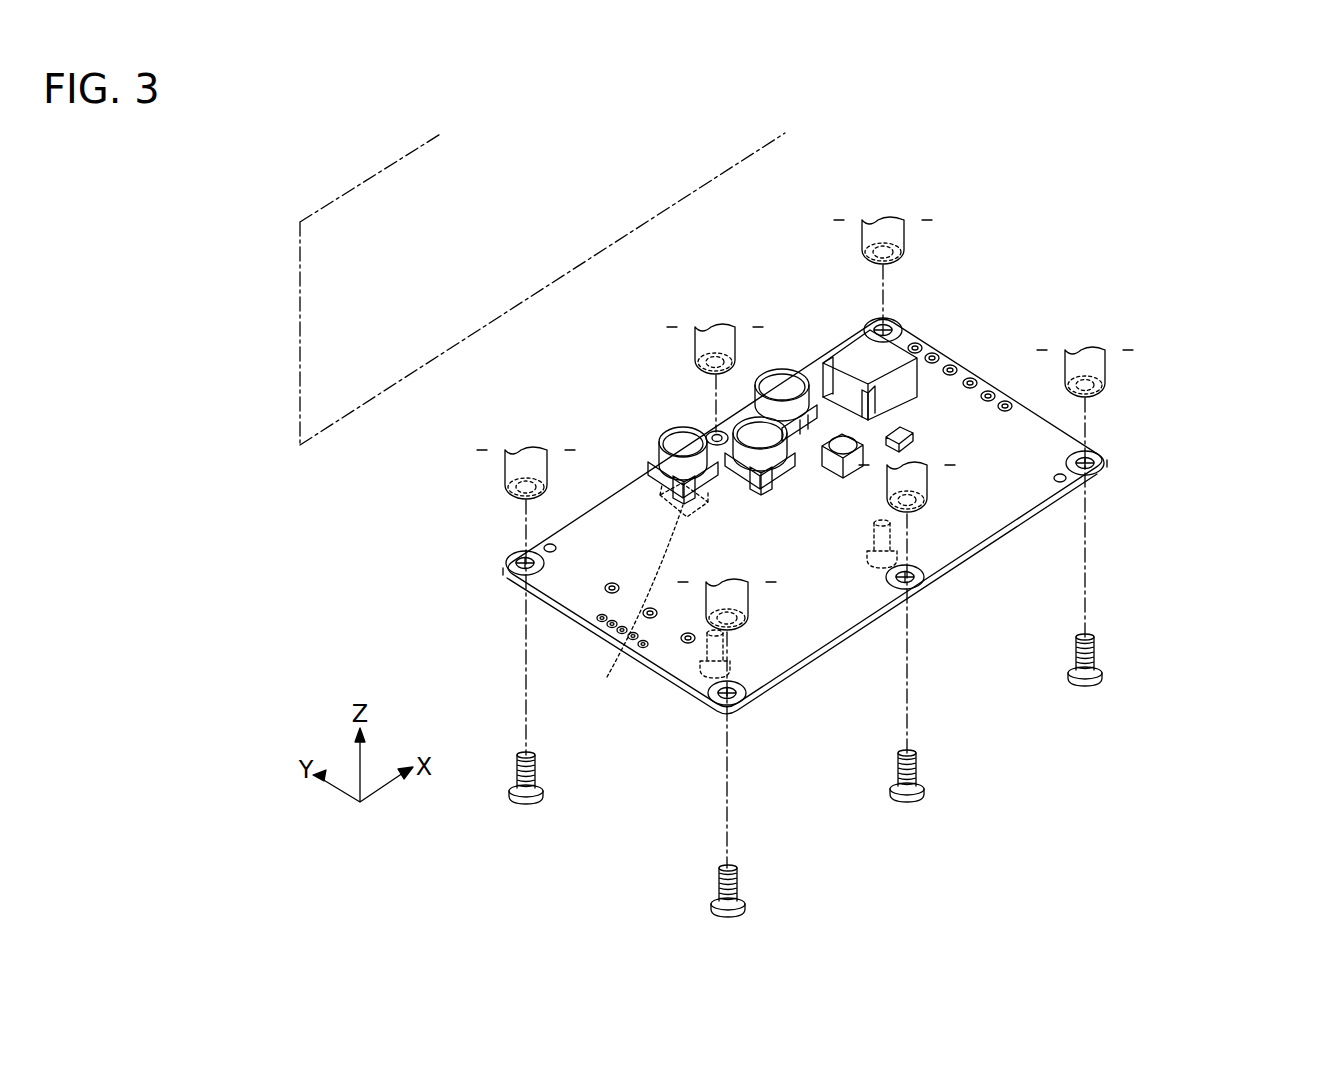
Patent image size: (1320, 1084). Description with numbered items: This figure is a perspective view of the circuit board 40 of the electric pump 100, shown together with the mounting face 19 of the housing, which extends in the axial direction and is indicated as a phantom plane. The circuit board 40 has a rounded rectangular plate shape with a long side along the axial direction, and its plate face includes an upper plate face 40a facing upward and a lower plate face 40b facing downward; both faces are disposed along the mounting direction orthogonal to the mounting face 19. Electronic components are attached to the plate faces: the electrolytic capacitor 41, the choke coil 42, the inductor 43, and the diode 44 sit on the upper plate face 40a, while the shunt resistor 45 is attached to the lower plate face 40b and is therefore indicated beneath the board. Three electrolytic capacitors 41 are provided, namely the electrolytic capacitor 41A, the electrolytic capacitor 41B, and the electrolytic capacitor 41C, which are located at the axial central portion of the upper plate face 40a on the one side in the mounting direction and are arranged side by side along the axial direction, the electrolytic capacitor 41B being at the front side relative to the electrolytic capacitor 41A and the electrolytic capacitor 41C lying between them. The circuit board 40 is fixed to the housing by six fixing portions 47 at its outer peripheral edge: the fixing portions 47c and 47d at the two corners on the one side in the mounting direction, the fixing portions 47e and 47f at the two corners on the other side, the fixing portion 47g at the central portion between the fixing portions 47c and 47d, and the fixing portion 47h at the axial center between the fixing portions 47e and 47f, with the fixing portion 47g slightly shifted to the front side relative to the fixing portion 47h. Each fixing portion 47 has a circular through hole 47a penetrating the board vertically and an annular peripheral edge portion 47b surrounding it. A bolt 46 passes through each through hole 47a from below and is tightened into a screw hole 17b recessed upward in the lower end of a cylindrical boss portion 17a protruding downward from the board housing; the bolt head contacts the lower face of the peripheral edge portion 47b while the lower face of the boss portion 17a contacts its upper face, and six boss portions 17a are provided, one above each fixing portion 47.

The electric pump 100 is at (1165, 272).
The mounting face 19 is at (300, 382).
The boss portion 17a is at (886, 230).
The screw hole 17b is at (718, 350).
The circuit board 40 is at (877, 498).
The upper plate face 40a is at (1022, 440).
The lower plate face 40b is at (970, 524).
The electrolytic capacitor 41 is at (712, 489).
The electrolytic capacitor 41A is at (680, 440).
The electrolytic capacitor 41B is at (786, 385).
The electrolytic capacitor 41C is at (775, 425).
The choke coil 42 is at (893, 375).
The inductor 43 is at (843, 470).
The diode 44 is at (905, 428).
The shunt resistor 45 is at (633, 610).
The bolt 46 is at (520, 803).
The fixing portion 47 is at (805, 518).
The through hole 47a is at (540, 570).
The peripheral edge portion 47b is at (505, 560).
The fixing portion 47c is at (893, 345).
The fixing portion 47d is at (525, 568).
The fixing portion 47e is at (1092, 455).
The fixing portion 47f is at (722, 702).
The fixing portion 47g is at (713, 432).
The fixing portion 47h is at (922, 582).